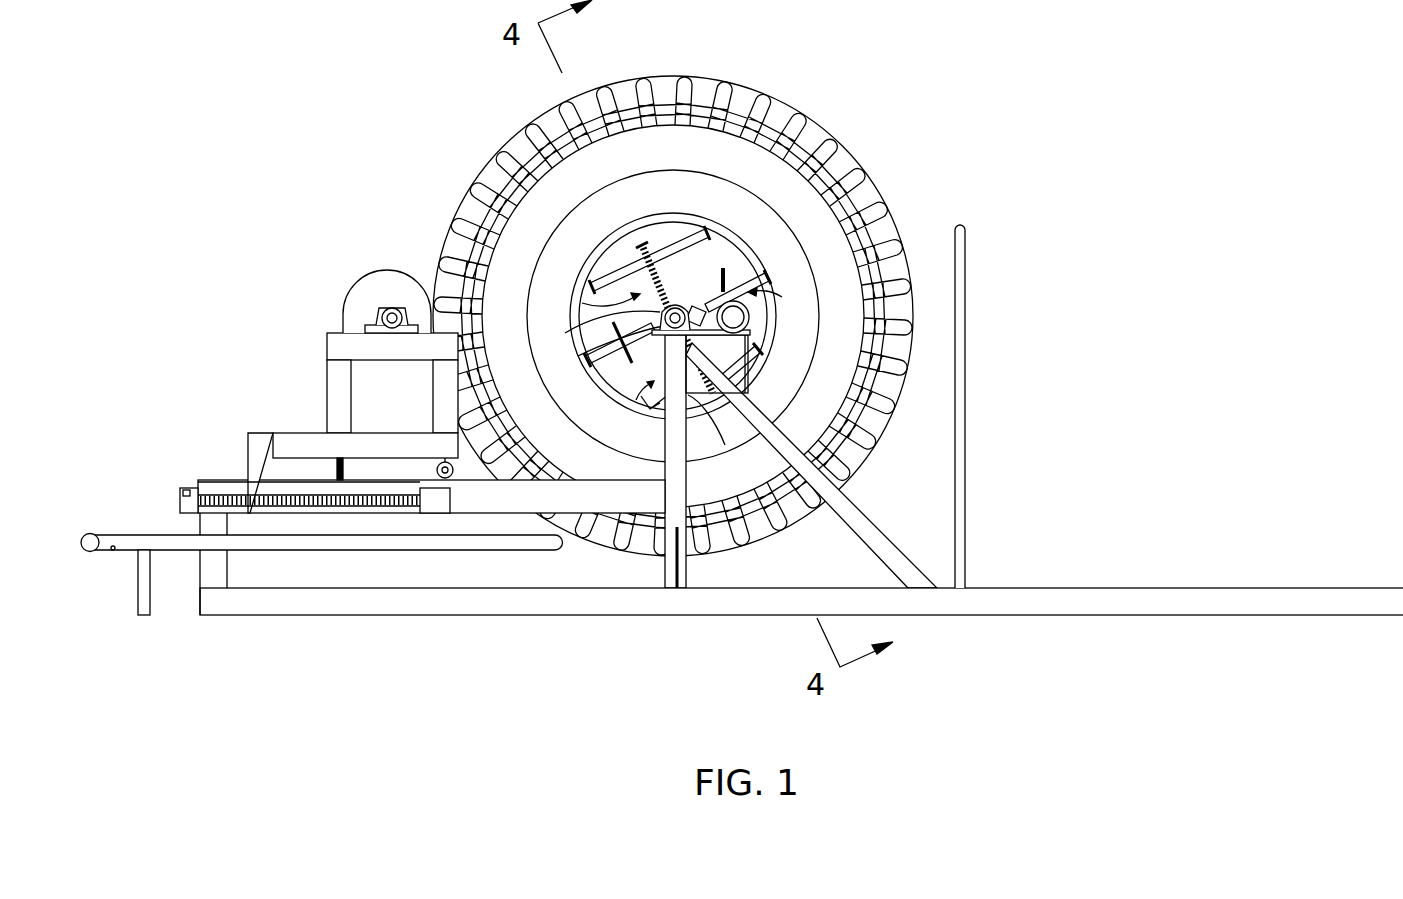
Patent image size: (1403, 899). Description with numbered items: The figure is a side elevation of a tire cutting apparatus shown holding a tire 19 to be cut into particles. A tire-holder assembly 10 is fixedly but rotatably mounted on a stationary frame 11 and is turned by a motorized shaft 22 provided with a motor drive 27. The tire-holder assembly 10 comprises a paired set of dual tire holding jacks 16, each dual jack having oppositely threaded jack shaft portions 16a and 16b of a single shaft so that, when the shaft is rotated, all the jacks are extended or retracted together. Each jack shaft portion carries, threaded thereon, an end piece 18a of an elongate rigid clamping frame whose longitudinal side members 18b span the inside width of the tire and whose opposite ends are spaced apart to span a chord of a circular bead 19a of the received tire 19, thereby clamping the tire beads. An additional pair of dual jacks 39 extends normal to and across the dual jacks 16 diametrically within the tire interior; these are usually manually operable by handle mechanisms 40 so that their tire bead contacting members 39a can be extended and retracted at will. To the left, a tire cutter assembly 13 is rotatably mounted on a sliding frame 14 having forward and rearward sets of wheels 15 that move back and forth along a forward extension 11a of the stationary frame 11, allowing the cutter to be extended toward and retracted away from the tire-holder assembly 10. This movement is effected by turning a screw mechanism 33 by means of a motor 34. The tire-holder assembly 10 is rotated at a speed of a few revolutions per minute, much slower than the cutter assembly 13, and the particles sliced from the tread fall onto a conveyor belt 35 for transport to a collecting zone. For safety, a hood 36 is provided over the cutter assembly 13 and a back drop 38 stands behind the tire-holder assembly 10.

The tire-holder assembly 10 is at (677, 228).
The stationary frame 11 is at (856, 600).
The forward extension of stationary frame 11a is at (647, 562).
The tire cutter assembly 13 is at (386, 258).
The sliding frame 14 is at (305, 443).
The wheels 15 is at (268, 478).
The dual tire holding jacks 16 is at (600, 304).
The dual jack shaft portion 16a is at (675, 282).
The dual jack shaft portion 16b is at (698, 356).
The end piece of clamping frame 18a is at (615, 262).
The longitudinal side members of clamping frame 18b is at (703, 227).
The tire 19 is at (883, 165).
The tire bead 19a is at (728, 244).
The motorized shaft 22 is at (590, 333).
The motor drive 27 is at (760, 318).
The screw mechanism 33 is at (372, 505).
The motor 34 is at (180, 500).
The conveyor belt 35 is at (323, 545).
The hood 36 is at (358, 293).
The back drop 38 is at (965, 370).
The additional pair of dual jacks 39 is at (769, 305).
The tire bead contacting members 39a is at (588, 356).
The handle mechanisms 40 is at (757, 285).